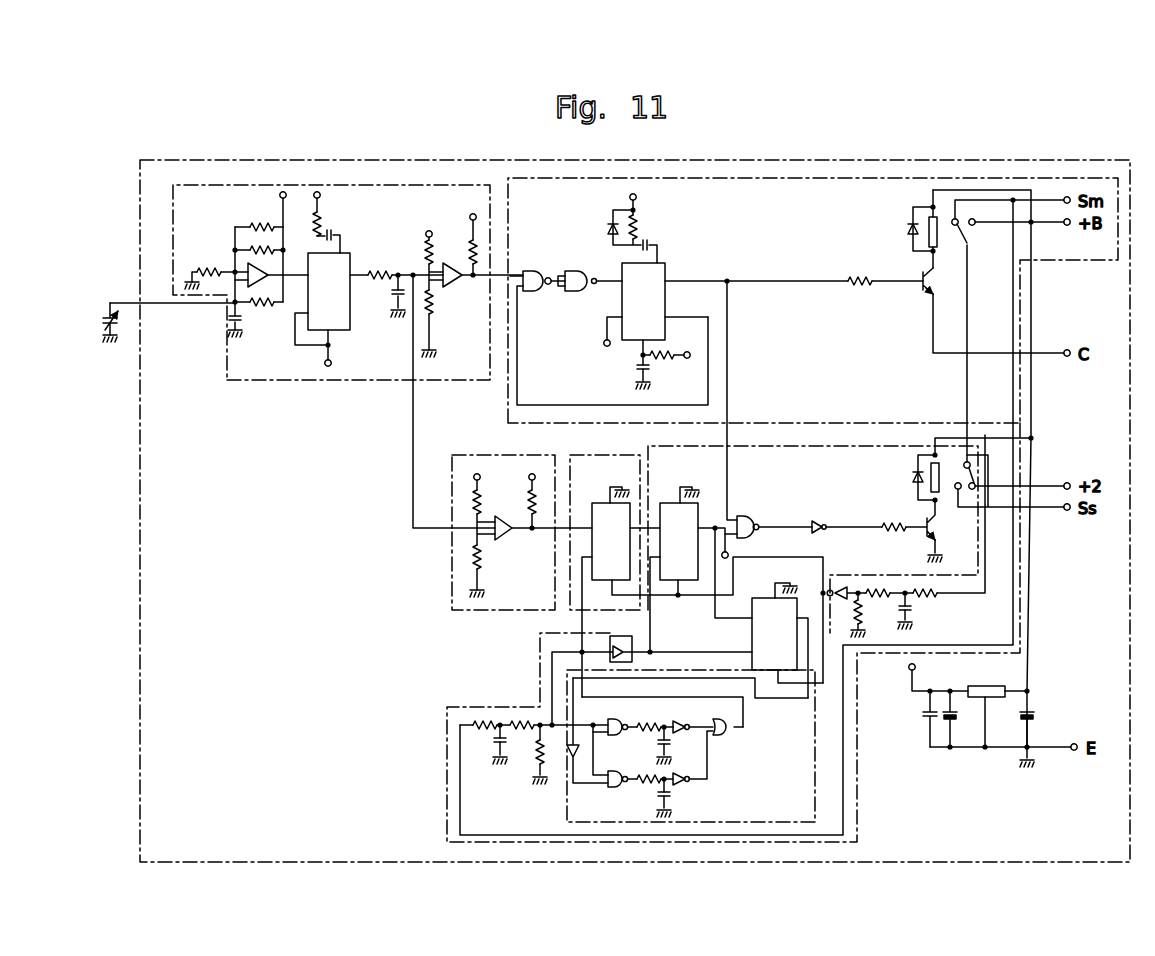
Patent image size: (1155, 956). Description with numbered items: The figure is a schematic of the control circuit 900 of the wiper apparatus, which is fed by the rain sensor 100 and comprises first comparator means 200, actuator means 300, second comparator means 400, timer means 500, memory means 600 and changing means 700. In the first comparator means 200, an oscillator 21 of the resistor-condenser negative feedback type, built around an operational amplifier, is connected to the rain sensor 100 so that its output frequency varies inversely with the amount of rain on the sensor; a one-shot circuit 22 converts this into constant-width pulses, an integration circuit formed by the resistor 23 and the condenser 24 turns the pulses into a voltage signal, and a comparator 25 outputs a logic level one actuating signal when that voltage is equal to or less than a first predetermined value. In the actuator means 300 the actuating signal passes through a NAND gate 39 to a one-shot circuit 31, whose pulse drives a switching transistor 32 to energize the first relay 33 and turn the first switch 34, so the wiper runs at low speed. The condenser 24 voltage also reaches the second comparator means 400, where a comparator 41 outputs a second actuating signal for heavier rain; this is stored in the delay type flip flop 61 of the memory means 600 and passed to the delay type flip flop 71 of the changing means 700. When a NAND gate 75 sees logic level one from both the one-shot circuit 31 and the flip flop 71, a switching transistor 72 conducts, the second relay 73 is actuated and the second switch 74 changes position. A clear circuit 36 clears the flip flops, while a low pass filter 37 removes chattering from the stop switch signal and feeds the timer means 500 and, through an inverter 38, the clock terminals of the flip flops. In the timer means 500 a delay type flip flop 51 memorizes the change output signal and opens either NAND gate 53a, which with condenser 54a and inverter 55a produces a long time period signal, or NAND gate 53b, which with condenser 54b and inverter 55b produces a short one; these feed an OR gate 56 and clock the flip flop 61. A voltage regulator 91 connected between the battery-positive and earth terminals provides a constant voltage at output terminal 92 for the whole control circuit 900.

The rain sensor 100 is at (105, 327).
The first comparator means 200 is at (311, 187).
The oscillator 21 is at (225, 243).
The one-shot circuit 22 is at (350, 242).
The resistor 23 is at (376, 270).
The condenser 24 is at (393, 292).
The comparator 25 is at (447, 259).
The actuator means 300 is at (765, 180).
The NAND gate 39 is at (531, 273).
The one-shot circuit 31 is at (661, 252).
The switching transistor 32 is at (928, 293).
The first relay 33 is at (940, 247).
The first switch 34 is at (969, 236).
The second comparator means 400 is at (462, 456).
The comparator 41 is at (495, 512).
The memory means 600 is at (584, 456).
The delay type flip flop 61 is at (597, 501).
The delay type flip flop 71 is at (674, 501).
The changing means 700 is at (805, 446).
The NAND gate 75 is at (745, 515).
The switching transistor 72 is at (925, 518).
The second relay 73 is at (941, 482).
The second switch 74 is at (966, 503).
The clear circuit 36 is at (920, 612).
The timer means 500 is at (687, 670).
The inverter 38 is at (610, 647).
The delay type flip flop 51 is at (752, 628).
The low pass filter 37 is at (496, 744).
The NAND gate 53a is at (609, 720).
The NAND gate 53b is at (620, 766).
The condenser 54a is at (668, 744).
The condenser 54b is at (657, 796).
The inverter 55a is at (688, 722).
The inverter 55b is at (690, 786).
The OR gate 56 is at (734, 732).
The voltage regulator 91 is at (980, 687).
The output terminal 92 is at (910, 673).
The control circuit 900 is at (1012, 163).